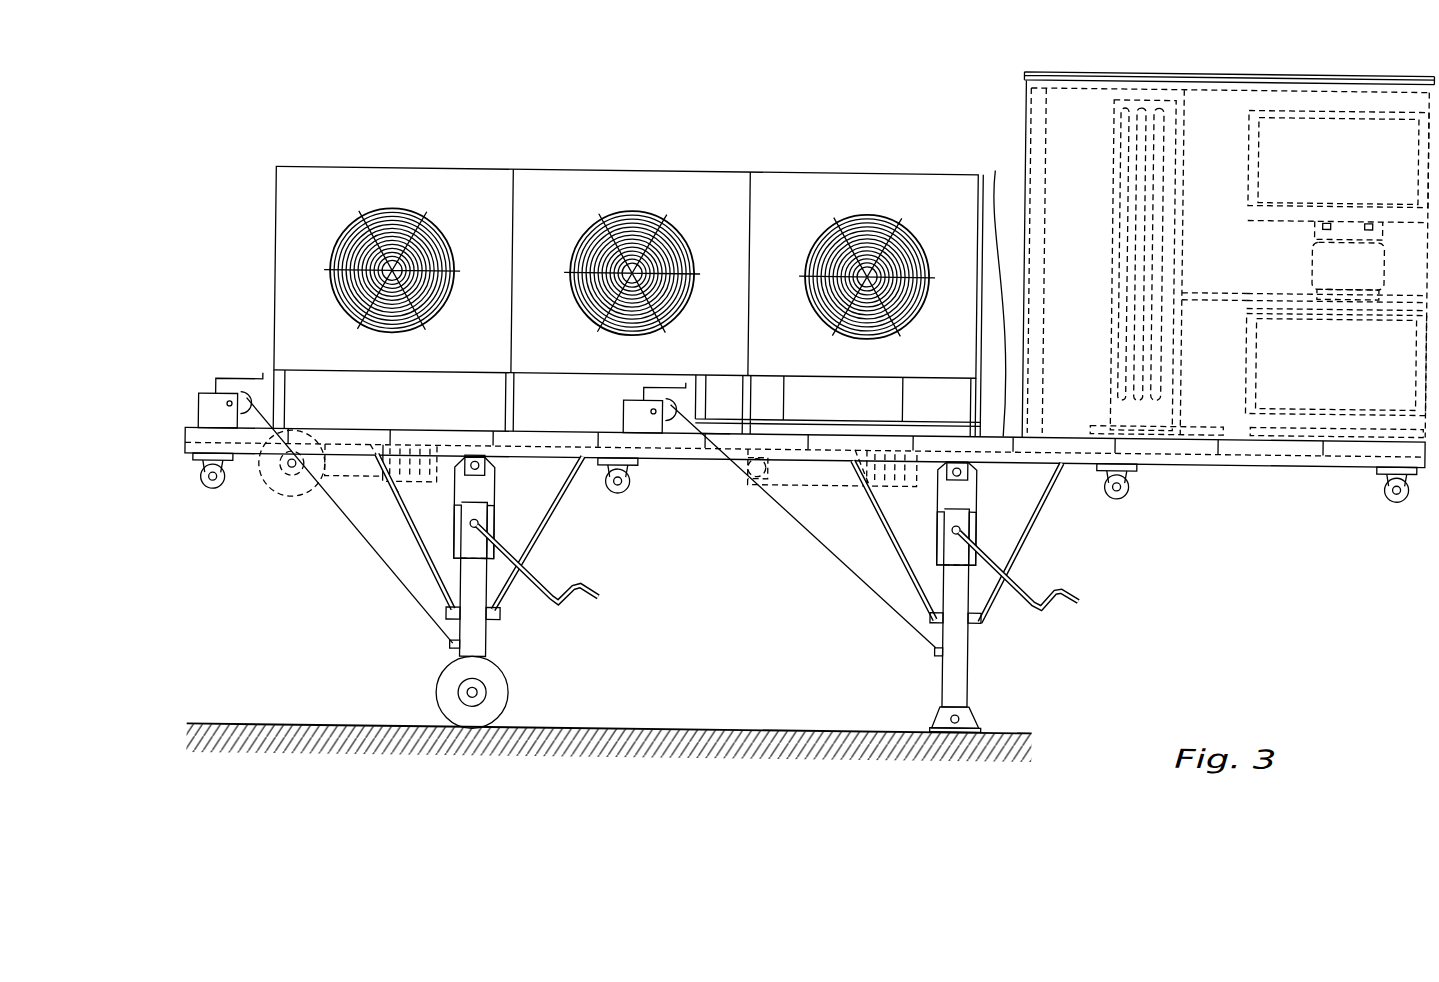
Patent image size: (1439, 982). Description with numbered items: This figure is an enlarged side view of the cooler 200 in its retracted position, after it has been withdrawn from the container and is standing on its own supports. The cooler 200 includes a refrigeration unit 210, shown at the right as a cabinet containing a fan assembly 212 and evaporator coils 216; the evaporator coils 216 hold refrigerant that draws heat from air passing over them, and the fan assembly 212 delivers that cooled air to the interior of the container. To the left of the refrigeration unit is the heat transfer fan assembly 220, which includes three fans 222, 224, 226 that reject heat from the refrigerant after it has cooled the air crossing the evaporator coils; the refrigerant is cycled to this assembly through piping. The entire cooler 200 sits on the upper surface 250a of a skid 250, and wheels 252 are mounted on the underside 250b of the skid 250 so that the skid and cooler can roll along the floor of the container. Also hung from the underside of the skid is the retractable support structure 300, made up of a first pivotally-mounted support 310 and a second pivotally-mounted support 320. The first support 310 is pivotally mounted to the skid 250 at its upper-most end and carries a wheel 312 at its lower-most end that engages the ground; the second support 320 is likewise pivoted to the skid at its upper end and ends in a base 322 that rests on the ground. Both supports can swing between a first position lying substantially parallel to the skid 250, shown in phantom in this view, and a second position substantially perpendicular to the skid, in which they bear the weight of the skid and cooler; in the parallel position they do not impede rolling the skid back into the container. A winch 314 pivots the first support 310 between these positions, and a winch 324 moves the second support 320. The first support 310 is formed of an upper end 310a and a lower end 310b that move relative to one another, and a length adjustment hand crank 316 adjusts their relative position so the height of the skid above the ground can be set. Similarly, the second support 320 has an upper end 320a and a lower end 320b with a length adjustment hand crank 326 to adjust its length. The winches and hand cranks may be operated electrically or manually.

The cooler 200 is at (793, 134).
The refrigeration unit 210 is at (1012, 126).
The fan assembly 212 is at (1237, 215).
The evaporator coils 216 is at (1110, 183).
The heat transfer fan assembly 220 is at (238, 296).
The fan 222 is at (470, 211).
The fan 224 is at (709, 211).
The fan 226 is at (947, 212).
The skid 250 is at (1268, 448).
The upper surface of skid 250a is at (991, 289).
The underside of skid 250b is at (712, 460).
The wheels 252 is at (205, 498).
The retractable support structure 300 is at (315, 631).
The first pivotally-mounted support 310 is at (512, 652).
The upper end of first support 310a is at (498, 482).
The lower end of first support 310b is at (490, 633).
The wheel 312 is at (512, 695).
The winch 314 is at (198, 419).
The length adjustment hand crank 316 is at (538, 574).
The second pivotally-mounted support 320 is at (988, 638).
The upper end of second support 320a is at (978, 490).
The lower end of second support 320b is at (972, 674).
The base 322 is at (935, 712).
The winch 324 is at (623, 413).
The length adjustment hand crank 326 is at (1020, 569).